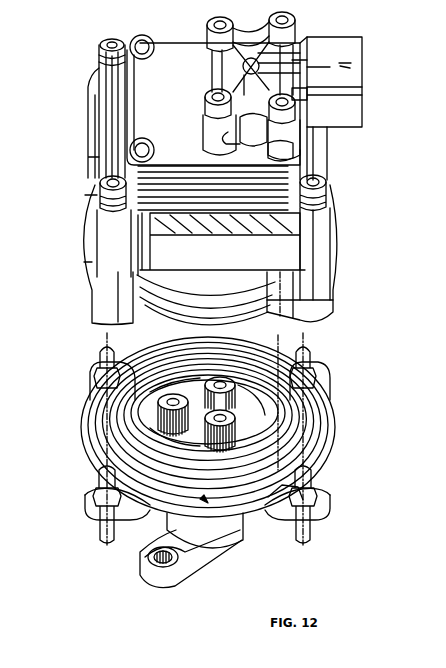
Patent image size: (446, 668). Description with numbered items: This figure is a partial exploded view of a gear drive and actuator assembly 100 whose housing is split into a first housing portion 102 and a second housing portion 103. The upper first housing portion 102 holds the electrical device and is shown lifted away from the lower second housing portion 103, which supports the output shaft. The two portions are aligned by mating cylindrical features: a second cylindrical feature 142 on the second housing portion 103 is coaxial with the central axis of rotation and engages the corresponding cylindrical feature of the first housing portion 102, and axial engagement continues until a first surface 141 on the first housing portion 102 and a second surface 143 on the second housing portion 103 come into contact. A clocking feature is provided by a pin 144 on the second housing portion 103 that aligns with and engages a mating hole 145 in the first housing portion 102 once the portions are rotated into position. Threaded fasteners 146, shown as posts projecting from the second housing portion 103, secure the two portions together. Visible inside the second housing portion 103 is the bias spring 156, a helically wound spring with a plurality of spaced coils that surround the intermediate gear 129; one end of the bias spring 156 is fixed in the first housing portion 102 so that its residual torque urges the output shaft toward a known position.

The gear drive and actuator assembly 100 is at (47, 194).
The first housing portion 102 is at (331, 223).
The second housing portion 103 is at (331, 412).
The intermediate gear 129 is at (163, 406).
The first surface 141 is at (81, 268).
The second cylindrical feature 142 is at (317, 446).
The second surface 143 is at (263, 507).
The pin 144 is at (291, 498).
The mating hole 145 is at (287, 297).
The threaded fasteners 146 is at (97, 356).
The bias spring 156 is at (123, 413).